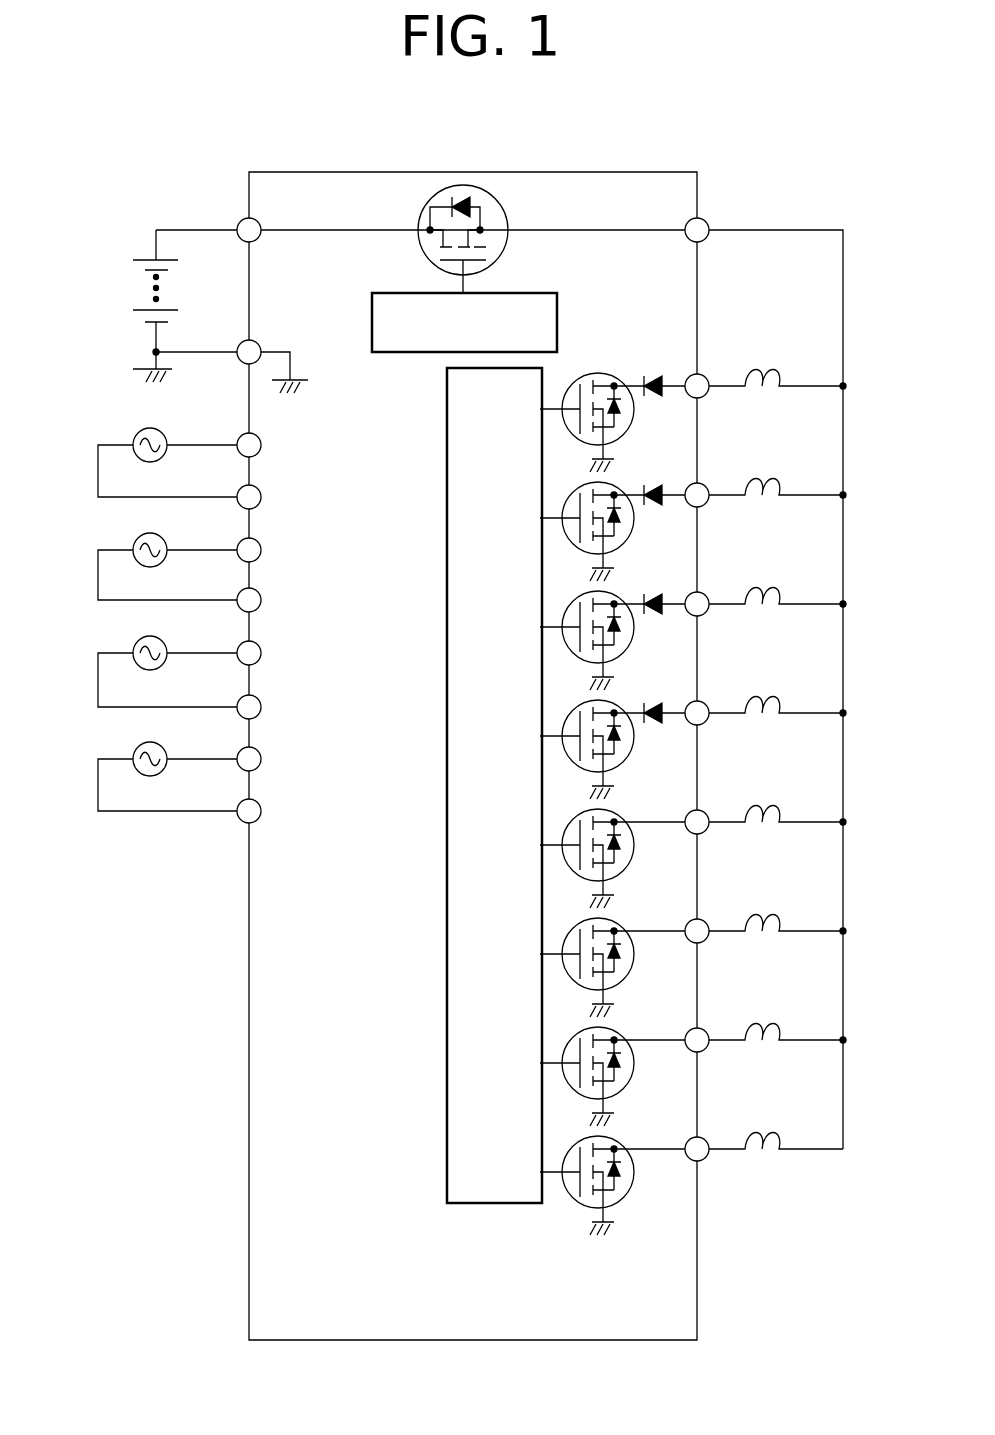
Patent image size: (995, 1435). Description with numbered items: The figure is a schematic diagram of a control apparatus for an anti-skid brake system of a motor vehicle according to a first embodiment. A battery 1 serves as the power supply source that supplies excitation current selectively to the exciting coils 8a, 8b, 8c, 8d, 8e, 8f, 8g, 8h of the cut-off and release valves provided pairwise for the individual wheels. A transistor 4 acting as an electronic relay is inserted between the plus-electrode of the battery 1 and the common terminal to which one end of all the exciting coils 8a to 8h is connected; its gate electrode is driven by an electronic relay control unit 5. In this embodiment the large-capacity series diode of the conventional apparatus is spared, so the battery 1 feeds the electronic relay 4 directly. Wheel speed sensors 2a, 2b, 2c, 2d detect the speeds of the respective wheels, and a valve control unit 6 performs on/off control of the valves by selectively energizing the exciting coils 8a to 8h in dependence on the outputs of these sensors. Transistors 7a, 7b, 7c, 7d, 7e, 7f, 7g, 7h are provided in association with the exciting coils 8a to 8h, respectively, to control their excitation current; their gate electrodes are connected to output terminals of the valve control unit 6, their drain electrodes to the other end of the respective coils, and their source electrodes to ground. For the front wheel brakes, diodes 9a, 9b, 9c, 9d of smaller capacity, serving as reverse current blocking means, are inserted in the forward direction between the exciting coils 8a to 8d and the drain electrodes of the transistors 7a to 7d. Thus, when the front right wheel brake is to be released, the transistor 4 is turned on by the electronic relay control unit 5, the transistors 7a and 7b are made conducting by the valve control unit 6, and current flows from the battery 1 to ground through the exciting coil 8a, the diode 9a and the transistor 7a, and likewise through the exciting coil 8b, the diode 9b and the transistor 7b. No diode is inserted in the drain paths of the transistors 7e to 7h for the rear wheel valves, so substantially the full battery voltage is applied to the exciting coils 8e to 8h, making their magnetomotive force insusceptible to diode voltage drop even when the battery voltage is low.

The battery 1 is at (135, 263).
The wheel speed sensor 2a is at (160, 431).
The wheel speed sensor 2b is at (160, 536).
The wheel speed sensor 2c is at (160, 639).
The wheel speed sensor 2d is at (160, 745).
The transistor 4 is at (425, 206).
The electronic relay control unit 5 is at (372, 325).
The valve control unit 6 is at (447, 430).
The transistor 7a is at (608, 373).
The transistor 7b is at (608, 482).
The transistor 7c is at (608, 591).
The transistor 7d is at (608, 700).
The transistor 7e is at (608, 809).
The transistor 7f is at (608, 918).
The transistor 7g is at (608, 1027).
The transistor 7h is at (608, 1136).
The exciting coil 8a is at (765, 372).
The exciting coil 8b is at (765, 481).
The exciting coil 8c is at (765, 590).
The exciting coil 8d is at (765, 699).
The exciting coil 8e is at (765, 808).
The exciting coil 8f is at (765, 917).
The exciting coil 8g is at (765, 1026).
The exciting coil 8h is at (765, 1135).
The diode 9a is at (658, 374).
The diode 9b is at (658, 483).
The diode 9c is at (658, 592).
The diode 9d is at (658, 701).